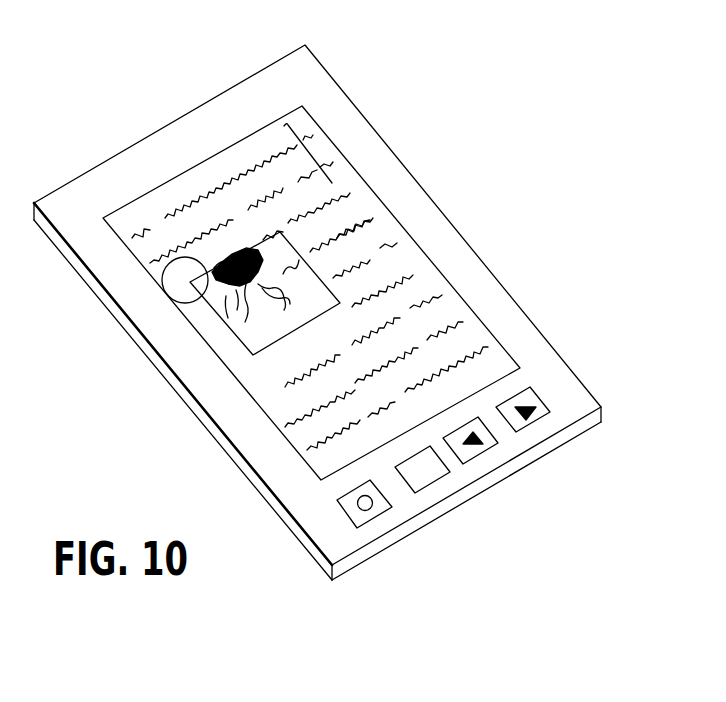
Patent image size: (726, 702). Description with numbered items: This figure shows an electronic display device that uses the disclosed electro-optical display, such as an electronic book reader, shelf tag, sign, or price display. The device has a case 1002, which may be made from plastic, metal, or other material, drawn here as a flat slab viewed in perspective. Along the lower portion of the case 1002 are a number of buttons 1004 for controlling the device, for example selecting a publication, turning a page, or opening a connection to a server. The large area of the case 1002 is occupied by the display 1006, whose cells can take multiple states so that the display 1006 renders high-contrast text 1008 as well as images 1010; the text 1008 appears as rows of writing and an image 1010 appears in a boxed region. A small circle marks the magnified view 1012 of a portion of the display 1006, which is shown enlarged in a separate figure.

The case 1002 is at (158, 129).
The buttons 1004 is at (376, 517).
The display 1006 is at (400, 224).
The text 1008 is at (317, 153).
The images 1010 is at (235, 344).
The magnified view 1012 is at (186, 303).